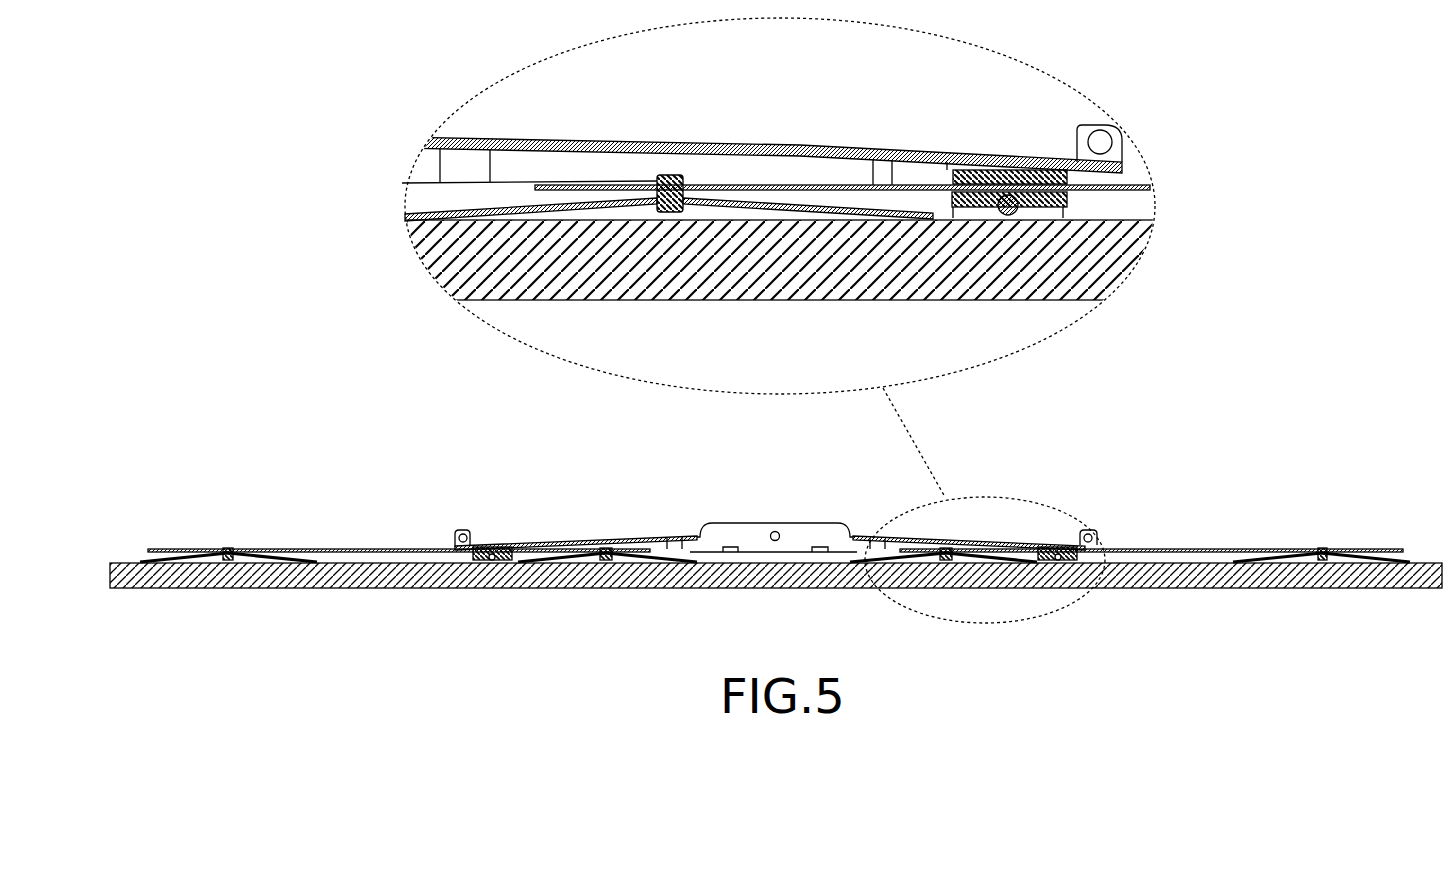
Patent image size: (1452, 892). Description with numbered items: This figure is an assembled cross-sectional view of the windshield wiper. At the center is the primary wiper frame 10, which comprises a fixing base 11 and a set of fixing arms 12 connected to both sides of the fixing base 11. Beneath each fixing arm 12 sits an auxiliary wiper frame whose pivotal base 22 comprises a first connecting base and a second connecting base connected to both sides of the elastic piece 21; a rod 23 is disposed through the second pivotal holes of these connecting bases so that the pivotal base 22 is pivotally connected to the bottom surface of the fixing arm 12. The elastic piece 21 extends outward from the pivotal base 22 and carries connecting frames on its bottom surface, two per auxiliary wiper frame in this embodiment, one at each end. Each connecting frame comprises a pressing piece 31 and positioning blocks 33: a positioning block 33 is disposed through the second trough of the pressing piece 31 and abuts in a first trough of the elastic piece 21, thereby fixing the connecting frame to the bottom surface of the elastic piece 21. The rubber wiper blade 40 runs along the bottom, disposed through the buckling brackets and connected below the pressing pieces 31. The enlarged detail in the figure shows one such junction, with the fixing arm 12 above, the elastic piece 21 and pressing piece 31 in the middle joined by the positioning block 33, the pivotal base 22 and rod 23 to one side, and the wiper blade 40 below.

The primary wiper frame 10 is at (770, 500).
The fixing base 11 is at (740, 527).
The fixing arm 12 is at (978, 536).
The elastic piece 21 is at (1172, 549).
The pivotal base 22 is at (1056, 547).
The rod 23 is at (1063, 563).
The pressing piece 31 is at (982, 565).
The positioning block 33 is at (945, 547).
The wiper blade 40 is at (1190, 577).